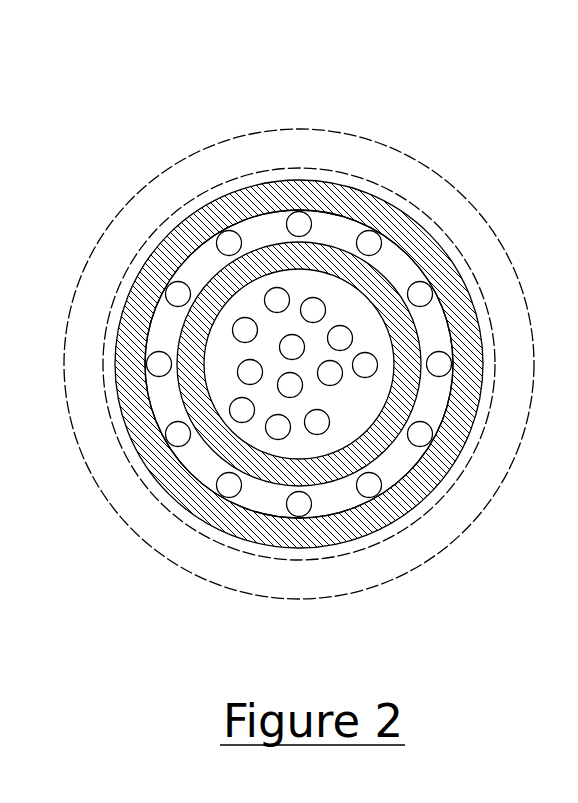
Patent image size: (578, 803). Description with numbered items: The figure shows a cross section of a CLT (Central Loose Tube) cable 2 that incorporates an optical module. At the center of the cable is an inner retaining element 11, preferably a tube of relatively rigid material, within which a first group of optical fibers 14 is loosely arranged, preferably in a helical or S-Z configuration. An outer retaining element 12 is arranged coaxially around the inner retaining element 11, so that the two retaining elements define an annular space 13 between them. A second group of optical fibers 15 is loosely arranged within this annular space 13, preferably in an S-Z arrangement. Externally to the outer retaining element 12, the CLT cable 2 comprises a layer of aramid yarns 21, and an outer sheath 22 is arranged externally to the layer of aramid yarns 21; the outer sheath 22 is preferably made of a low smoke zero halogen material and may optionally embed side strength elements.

The CLT cable 2 is at (133, 82).
The inner retaining element 11 is at (343, 255).
The outer retaining element 12 is at (413, 218).
The annular space 13 is at (438, 330).
The first group of optical fibers 14 is at (320, 434).
The second group of optical fibers 15 is at (383, 497).
The layer of aramid yarns 21 is at (138, 245).
The outer sheath 22 is at (80, 448).